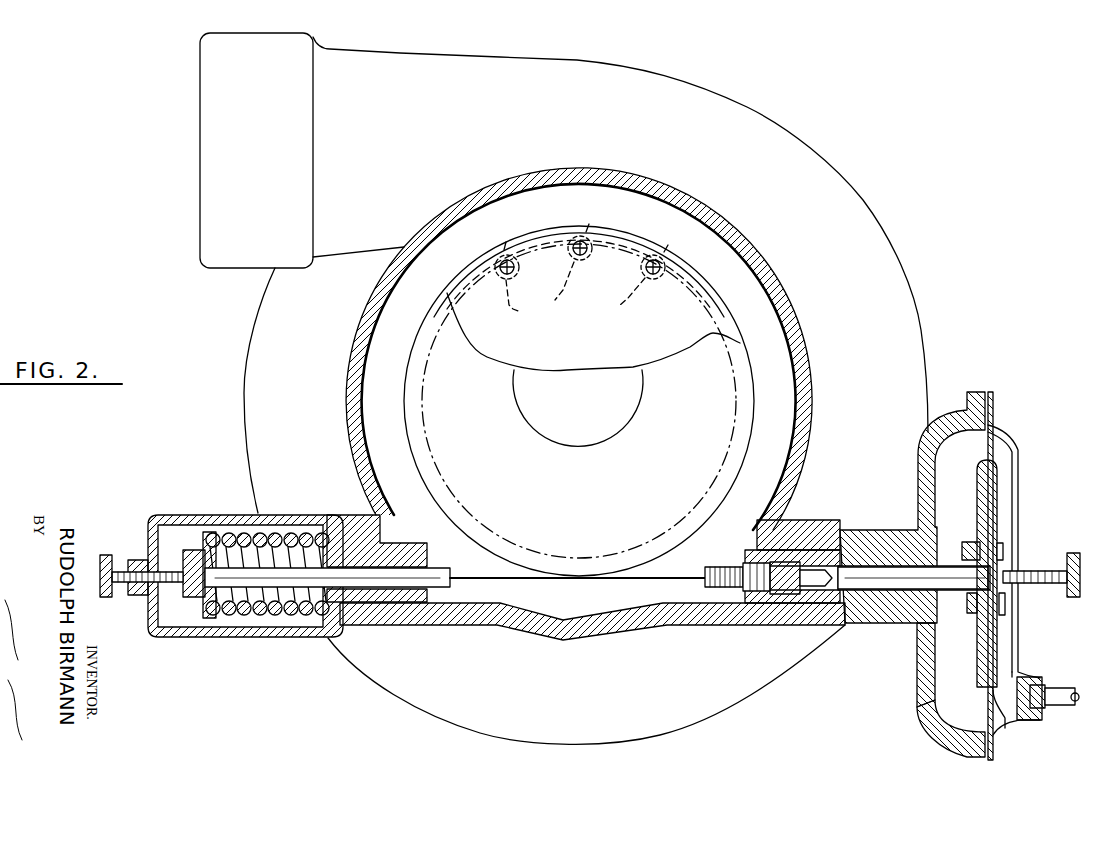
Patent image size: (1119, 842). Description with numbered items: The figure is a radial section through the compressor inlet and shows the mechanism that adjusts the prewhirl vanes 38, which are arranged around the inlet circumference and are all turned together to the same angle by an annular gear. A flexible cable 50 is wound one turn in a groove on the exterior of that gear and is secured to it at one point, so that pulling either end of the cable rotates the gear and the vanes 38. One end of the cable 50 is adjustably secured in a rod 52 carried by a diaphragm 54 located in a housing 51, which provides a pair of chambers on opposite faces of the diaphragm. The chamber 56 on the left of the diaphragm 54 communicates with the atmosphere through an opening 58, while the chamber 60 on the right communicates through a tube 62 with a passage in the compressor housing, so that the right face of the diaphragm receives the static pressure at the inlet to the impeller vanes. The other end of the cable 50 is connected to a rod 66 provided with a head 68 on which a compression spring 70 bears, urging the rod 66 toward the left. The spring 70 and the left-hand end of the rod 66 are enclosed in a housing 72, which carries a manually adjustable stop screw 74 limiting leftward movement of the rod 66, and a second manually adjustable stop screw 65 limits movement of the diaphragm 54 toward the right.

The vanes 38 is at (581, 278).
The flexible cable 50 is at (693, 565).
The housing 51 is at (935, 722).
The rod 52 is at (885, 592).
The diaphragm 54 is at (1010, 447).
The chamber 56 is at (953, 657).
The opening 58 is at (928, 682).
The chamber 60 is at (1007, 612).
The tube 62 is at (1057, 686).
The manually adjustable stop screw 65 is at (1073, 553).
The rod 66 is at (312, 575).
The head 68 is at (205, 612).
The compression spring 70 is at (267, 613).
The housing 72 is at (190, 517).
The manually adjustable stop screw 74 is at (108, 558).